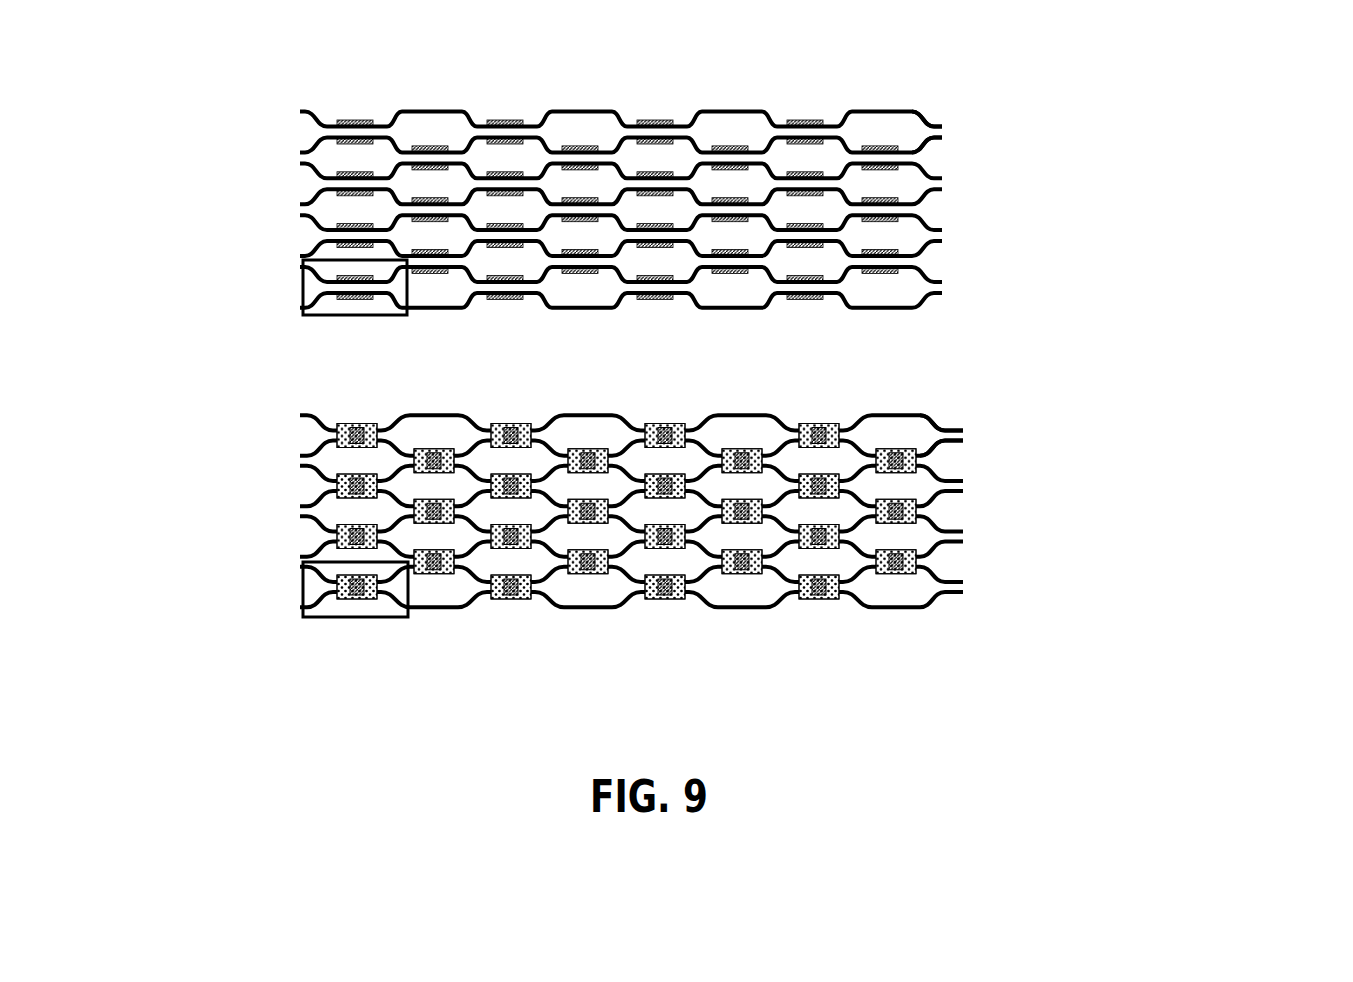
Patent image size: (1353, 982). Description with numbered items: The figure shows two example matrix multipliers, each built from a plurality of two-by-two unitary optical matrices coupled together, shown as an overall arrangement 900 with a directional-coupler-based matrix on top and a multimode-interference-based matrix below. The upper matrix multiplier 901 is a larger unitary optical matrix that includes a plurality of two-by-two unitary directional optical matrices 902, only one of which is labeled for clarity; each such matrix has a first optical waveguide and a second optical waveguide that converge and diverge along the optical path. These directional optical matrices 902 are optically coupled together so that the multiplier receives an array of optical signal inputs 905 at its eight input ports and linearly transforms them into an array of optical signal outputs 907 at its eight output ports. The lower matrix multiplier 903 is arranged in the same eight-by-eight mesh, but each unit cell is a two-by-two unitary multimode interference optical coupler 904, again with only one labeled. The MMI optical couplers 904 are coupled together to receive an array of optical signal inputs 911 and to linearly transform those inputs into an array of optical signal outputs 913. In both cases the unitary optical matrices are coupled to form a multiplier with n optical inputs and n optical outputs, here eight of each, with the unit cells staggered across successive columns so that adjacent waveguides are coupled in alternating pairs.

The optical matrix architectures 900 is at (1135, 76).
The array of optical signal inputs 905 is at (216, 126).
The array of optical signal inputs 911 is at (225, 474).
The matrix multiplier 901 is at (945, 107).
The array of optical signal outputs 907 is at (985, 137).
The matrix multiplier 903 is at (953, 407).
The array of optical signal outputs 913 is at (995, 438).
The 2×2 unitary directional optical matrix 902 is at (313, 318).
The 2×2 unitary multimode interference optical coupler 904 is at (320, 618).